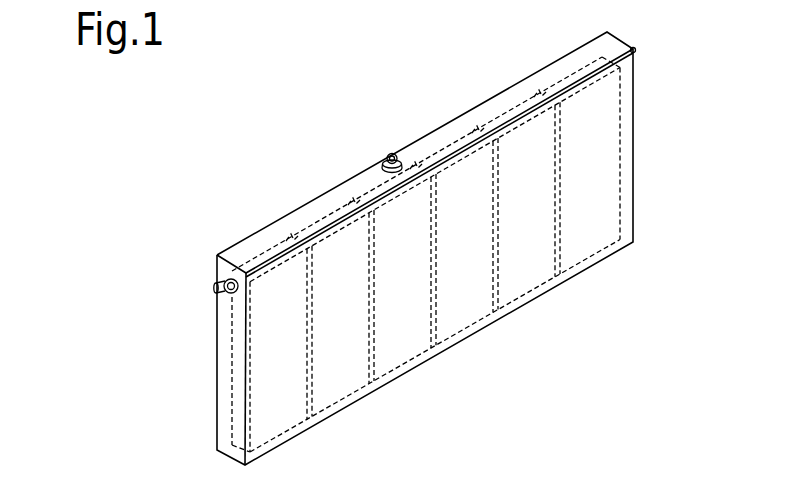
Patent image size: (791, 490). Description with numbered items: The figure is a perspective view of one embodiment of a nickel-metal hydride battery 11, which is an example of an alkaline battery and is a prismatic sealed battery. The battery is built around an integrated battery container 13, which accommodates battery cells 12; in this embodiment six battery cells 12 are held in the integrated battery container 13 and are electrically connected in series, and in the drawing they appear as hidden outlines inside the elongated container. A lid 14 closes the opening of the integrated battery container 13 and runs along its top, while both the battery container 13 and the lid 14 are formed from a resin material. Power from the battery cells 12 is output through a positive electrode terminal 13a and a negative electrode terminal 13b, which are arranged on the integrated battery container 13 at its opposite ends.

The battery module 11 is at (282, 154).
The battery cell 12 is at (295, 437).
The casing 13 is at (222, 336).
The terminal 13a is at (215, 283).
The terminal 13b is at (637, 51).
The lid 14 is at (488, 101).